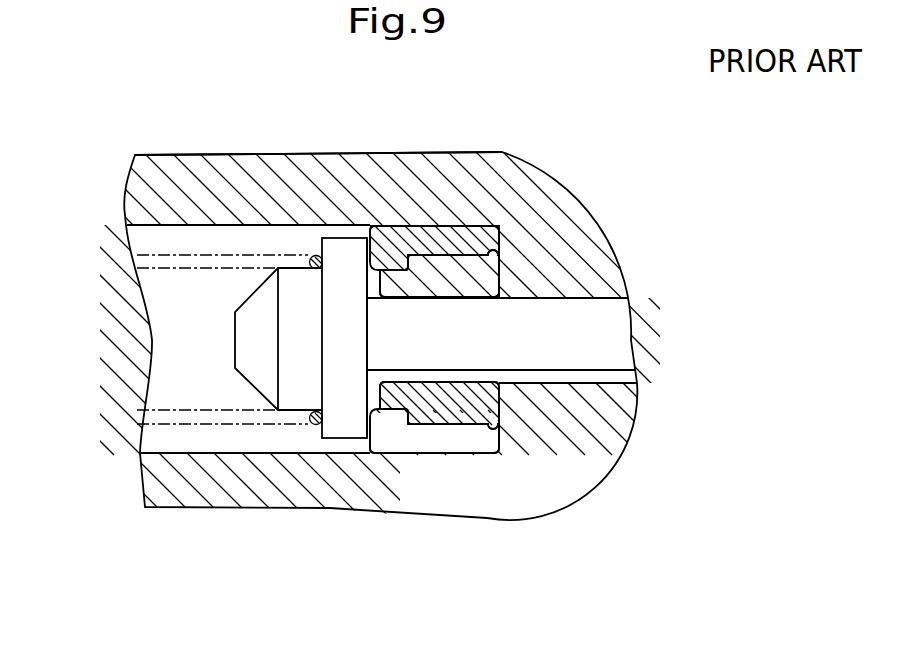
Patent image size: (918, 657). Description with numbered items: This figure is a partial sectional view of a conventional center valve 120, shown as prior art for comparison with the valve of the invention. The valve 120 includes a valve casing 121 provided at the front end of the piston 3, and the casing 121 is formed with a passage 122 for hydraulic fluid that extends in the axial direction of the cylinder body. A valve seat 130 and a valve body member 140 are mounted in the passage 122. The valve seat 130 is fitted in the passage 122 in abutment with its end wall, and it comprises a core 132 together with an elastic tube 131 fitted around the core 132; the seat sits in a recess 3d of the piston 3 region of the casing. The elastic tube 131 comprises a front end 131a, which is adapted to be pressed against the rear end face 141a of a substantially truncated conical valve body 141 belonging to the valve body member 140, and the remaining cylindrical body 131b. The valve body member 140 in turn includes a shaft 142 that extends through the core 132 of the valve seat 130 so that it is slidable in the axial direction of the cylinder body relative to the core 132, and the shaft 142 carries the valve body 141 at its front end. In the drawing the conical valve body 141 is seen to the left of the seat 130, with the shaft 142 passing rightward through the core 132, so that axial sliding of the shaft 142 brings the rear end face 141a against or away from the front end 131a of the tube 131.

The piston 3 is at (197, 200).
The seal accommodating recess of valve body 3d is at (504, 258).
The center valve 120 is at (265, 228).
The valve casing 121 is at (318, 131).
The passage 122 is at (218, 451).
The valve seat 130 is at (433, 204).
The elastic tube 131 is at (397, 437).
The front end 131a is at (382, 250).
The cylindrical body 131b is at (473, 237).
The core 132 is at (507, 445).
The valve body member 140 is at (209, 343).
The valve body 141 is at (338, 415).
The rear end face 141a is at (373, 413).
The shaft 142 is at (590, 340).